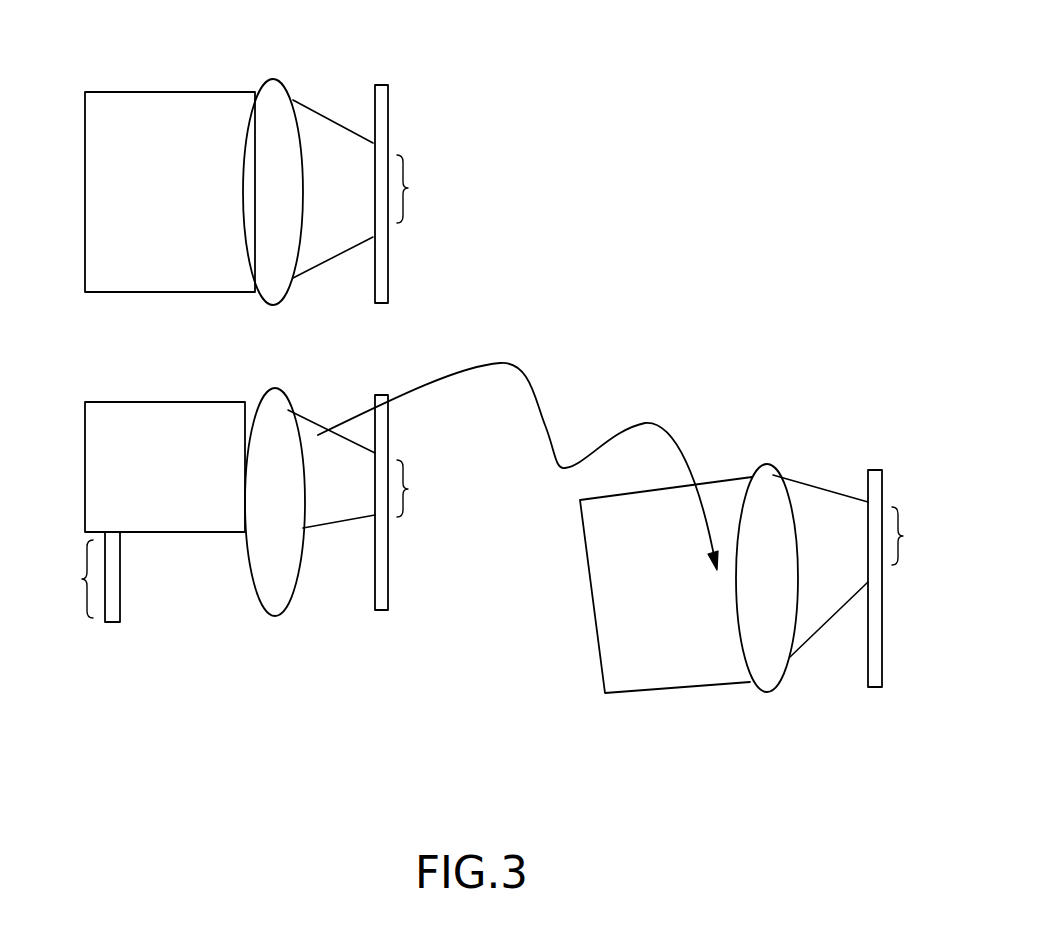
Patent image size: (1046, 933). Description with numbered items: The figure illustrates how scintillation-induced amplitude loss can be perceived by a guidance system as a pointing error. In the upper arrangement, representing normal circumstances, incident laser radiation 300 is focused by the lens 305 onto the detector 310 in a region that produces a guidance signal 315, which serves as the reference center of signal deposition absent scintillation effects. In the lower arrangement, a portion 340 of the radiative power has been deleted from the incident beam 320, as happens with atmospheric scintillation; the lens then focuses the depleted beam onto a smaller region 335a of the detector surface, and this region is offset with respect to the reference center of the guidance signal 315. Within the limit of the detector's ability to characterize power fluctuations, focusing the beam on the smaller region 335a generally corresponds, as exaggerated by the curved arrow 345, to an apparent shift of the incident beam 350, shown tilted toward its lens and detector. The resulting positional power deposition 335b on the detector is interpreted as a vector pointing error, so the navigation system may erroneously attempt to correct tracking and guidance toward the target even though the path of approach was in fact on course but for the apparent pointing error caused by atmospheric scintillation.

The incident laser radiation 300 is at (138, 107).
The lens 305 is at (278, 93).
The detector 310 is at (388, 97).
The guidance signal 315 is at (423, 189).
The incident beam 320 is at (115, 417).
The smaller region 335a is at (429, 488).
The positional power deposition 335b is at (924, 536).
The portion of the radiative power 340 is at (81, 577).
The correspondence to incident beam shift 345 is at (612, 437).
The incident beam 350 is at (693, 668).